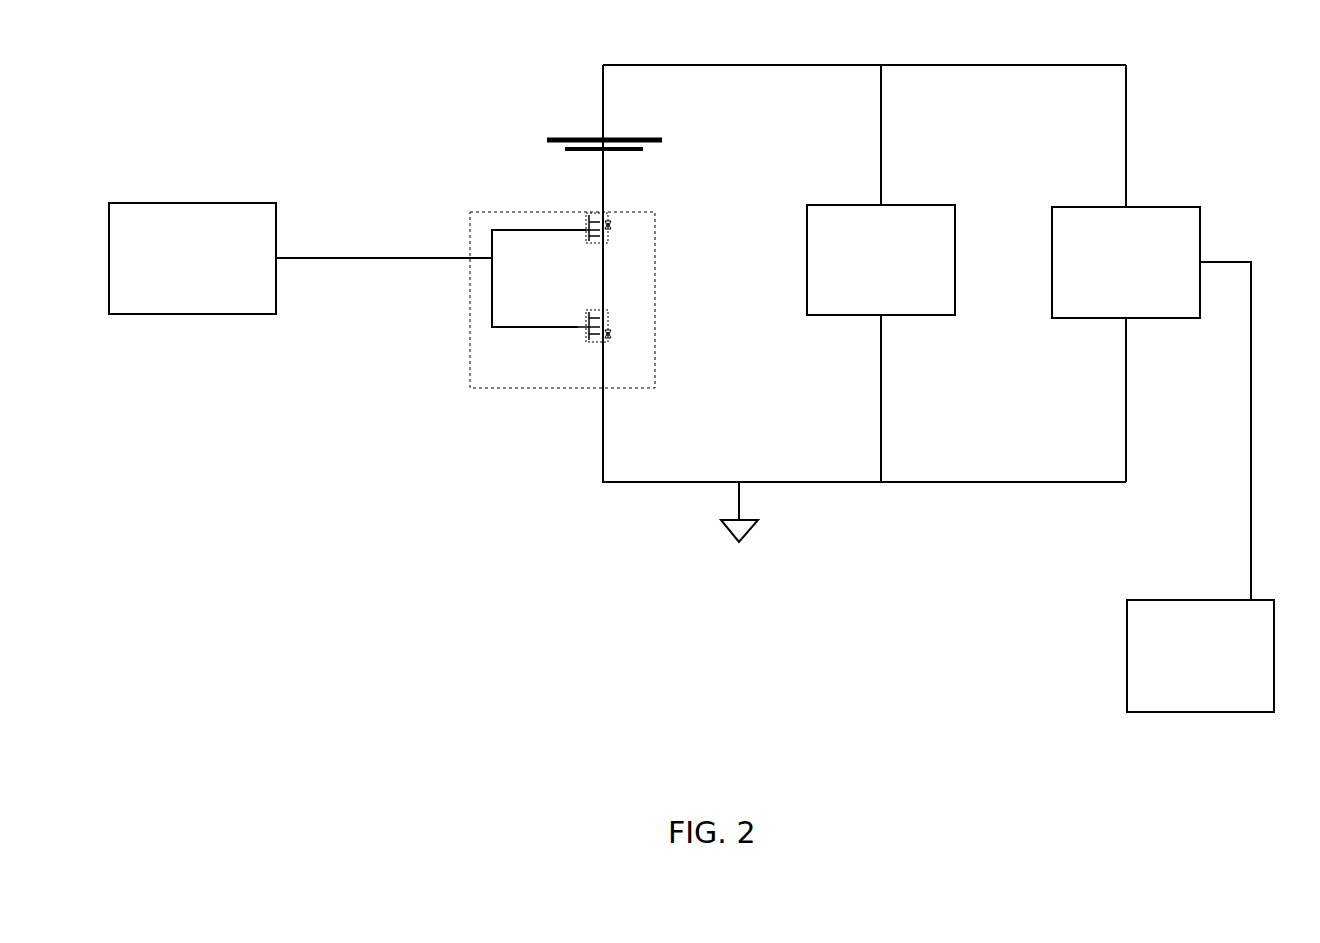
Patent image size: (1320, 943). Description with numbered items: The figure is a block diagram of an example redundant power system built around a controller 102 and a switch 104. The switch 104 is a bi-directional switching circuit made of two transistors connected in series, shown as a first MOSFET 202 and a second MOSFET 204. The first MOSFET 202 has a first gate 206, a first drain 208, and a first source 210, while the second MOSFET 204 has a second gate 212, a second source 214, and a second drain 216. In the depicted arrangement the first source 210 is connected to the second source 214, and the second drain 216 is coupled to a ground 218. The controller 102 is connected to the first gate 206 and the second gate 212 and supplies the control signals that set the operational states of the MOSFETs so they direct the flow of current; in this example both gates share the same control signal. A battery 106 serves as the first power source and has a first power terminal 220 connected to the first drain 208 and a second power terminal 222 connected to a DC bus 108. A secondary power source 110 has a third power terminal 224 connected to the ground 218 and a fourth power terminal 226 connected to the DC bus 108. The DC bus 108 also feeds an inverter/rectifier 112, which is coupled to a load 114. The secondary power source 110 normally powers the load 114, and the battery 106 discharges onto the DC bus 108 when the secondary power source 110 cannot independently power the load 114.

The controller 102 is at (198, 203).
The switch 104 is at (562, 273).
The battery 106 is at (605, 127).
The DC bus 108 is at (835, 65).
The secondary power source 110 is at (902, 246).
The inverter/rectifier 112 is at (1154, 207).
The load 114 is at (1143, 600).
The first MOSFET 202 is at (587, 227).
The second MOSFET 204 is at (619, 307).
The first gate 206 is at (585, 228).
The first drain 208 is at (603, 215).
The first source 210 is at (603, 243).
The second gate 212 is at (578, 327).
The second source 214 is at (605, 307).
The second drain 216 is at (604, 344).
The ground 218 is at (745, 537).
The first power terminal 220 is at (580, 152).
The second power terminal 222 is at (572, 138).
The third power terminal 224 is at (877, 315).
The fourth power terminal 226 is at (878, 205).